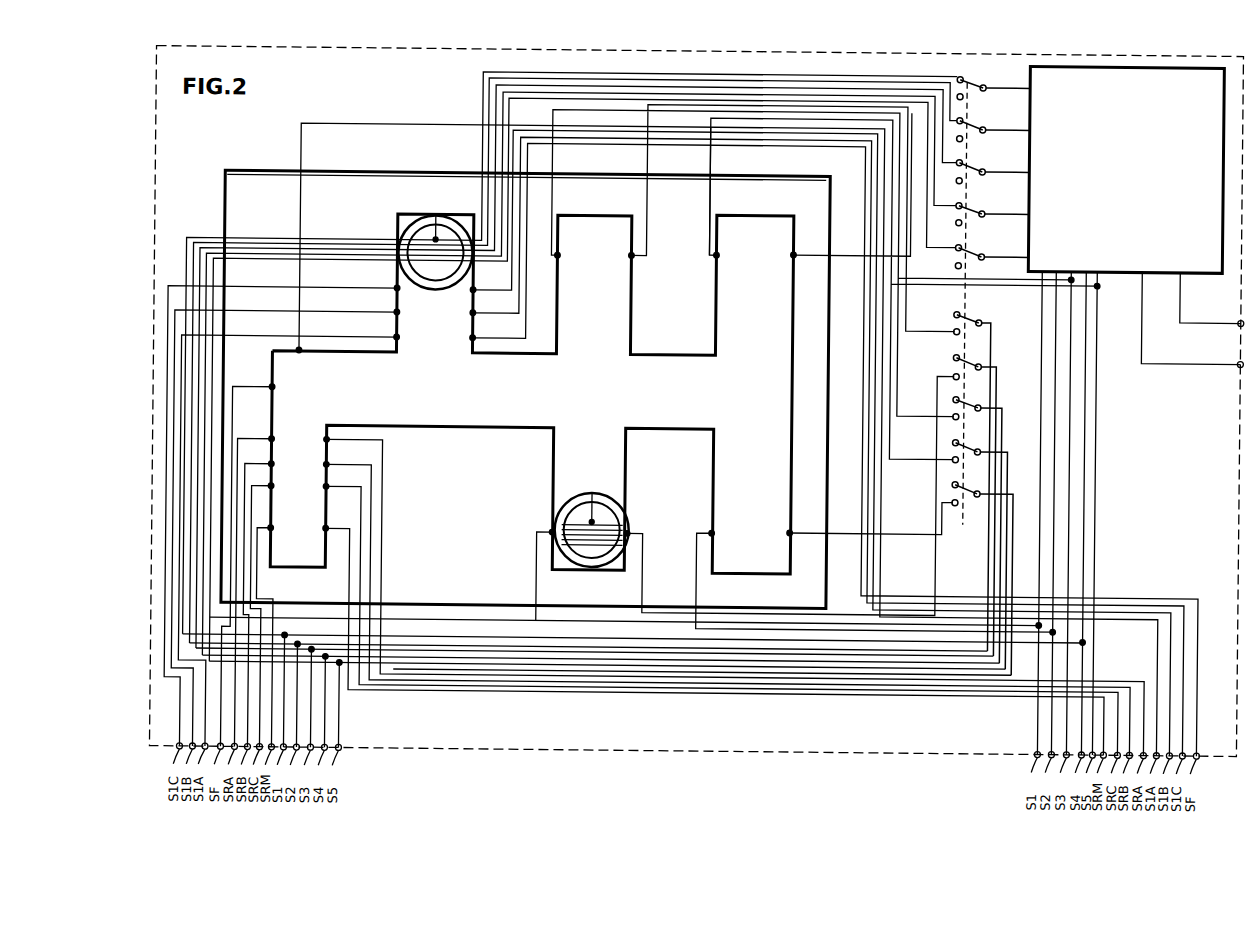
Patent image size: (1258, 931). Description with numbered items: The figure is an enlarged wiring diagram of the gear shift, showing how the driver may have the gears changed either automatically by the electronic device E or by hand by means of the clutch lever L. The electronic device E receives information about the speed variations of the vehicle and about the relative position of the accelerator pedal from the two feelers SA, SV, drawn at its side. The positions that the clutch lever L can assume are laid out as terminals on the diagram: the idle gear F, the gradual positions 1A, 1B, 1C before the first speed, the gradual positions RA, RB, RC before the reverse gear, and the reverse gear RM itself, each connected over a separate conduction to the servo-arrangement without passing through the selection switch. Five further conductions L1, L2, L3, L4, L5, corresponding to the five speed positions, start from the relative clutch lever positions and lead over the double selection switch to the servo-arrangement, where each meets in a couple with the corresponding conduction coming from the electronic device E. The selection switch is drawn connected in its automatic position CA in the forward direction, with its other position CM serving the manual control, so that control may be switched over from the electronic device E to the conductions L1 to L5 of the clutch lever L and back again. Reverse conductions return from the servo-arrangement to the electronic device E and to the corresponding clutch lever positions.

The electronic device E is at (1123, 411).
The conduction L1 is at (313, 259).
The conduction L2 is at (745, 498).
The conduction L3 is at (813, 261).
The conduction L4 is at (876, 567).
The conduction L5 is at (904, 286).
The clutch lever L is at (440, 230).
The gradual position before the first speed 1A is at (689, 448).
The gradual position before the first speed 1B is at (679, 445).
The gradual position before the first speed 1C is at (669, 441).
The idle gear position F is at (691, 438).
The gradual position before the reverse gear RA is at (690, 593).
The gradual position before the reverse gear RB is at (687, 606).
The gradual position before the reverse gear RC is at (684, 617).
The reverse gear position RM is at (680, 638).
The automatic position CA is at (980, 189).
The switch contacts CM is at (963, 104).
The feeler SV is at (1212, 300).
The feeler SA is at (1192, 320).